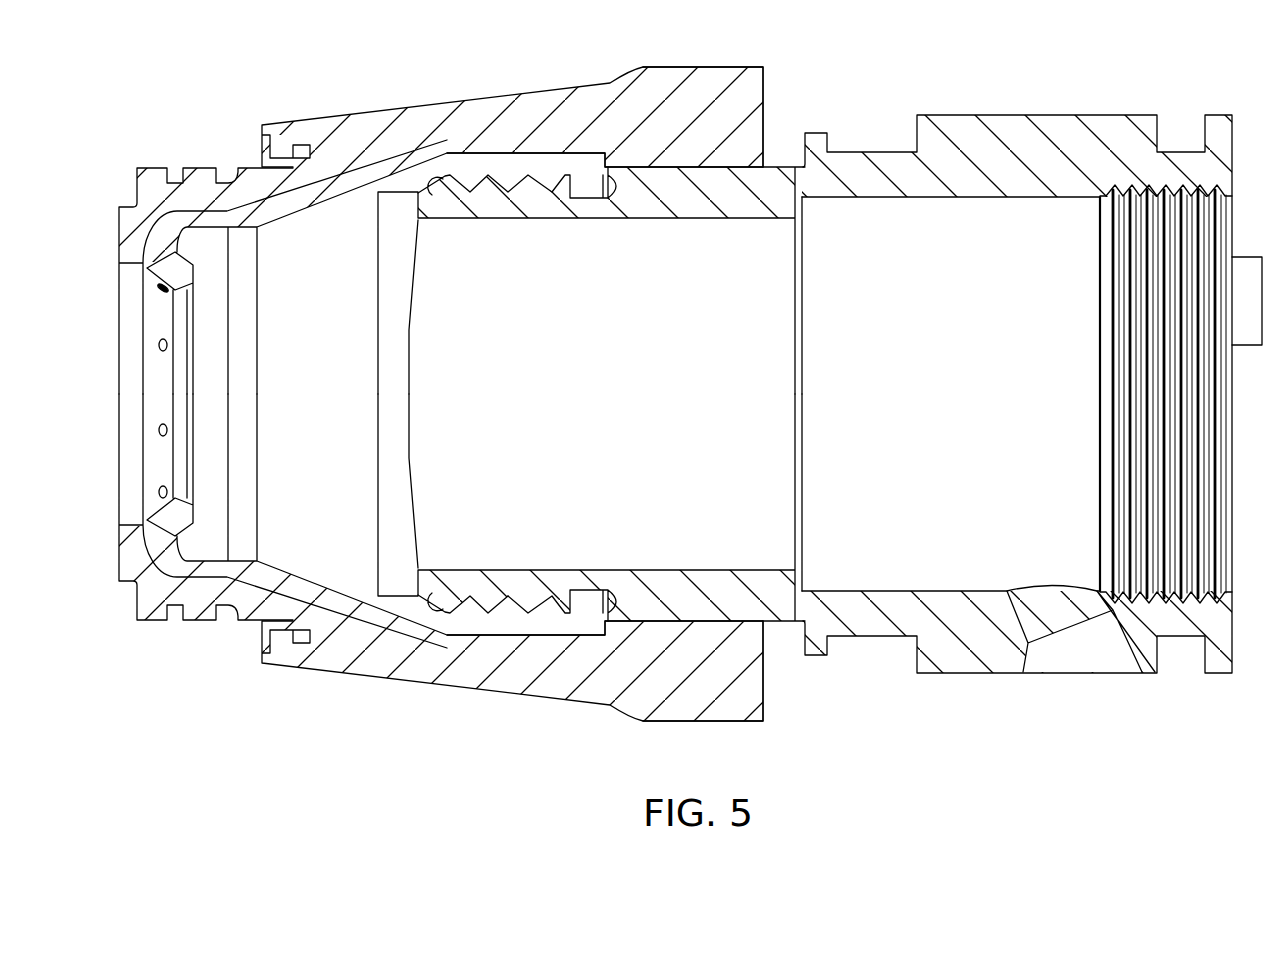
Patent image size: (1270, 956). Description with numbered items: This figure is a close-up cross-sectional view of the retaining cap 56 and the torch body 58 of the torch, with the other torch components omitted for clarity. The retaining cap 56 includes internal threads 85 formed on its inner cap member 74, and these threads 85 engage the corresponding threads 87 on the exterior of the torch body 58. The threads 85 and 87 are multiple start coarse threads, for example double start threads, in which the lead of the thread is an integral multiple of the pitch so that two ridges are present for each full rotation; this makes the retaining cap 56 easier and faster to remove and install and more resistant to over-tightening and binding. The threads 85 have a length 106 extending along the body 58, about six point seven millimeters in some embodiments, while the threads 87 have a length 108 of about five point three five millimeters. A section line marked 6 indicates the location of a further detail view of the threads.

The section line for FIG. 6 is at (605, 72).
The retaining cap 56 is at (648, 88).
The torch body 58 is at (858, 172).
The inner cap member 74 is at (310, 200).
The internal threads 85 is at (492, 598).
The threads 87 is at (508, 607).
The length 106 is at (450, 42).
The length 108 is at (450, 625).